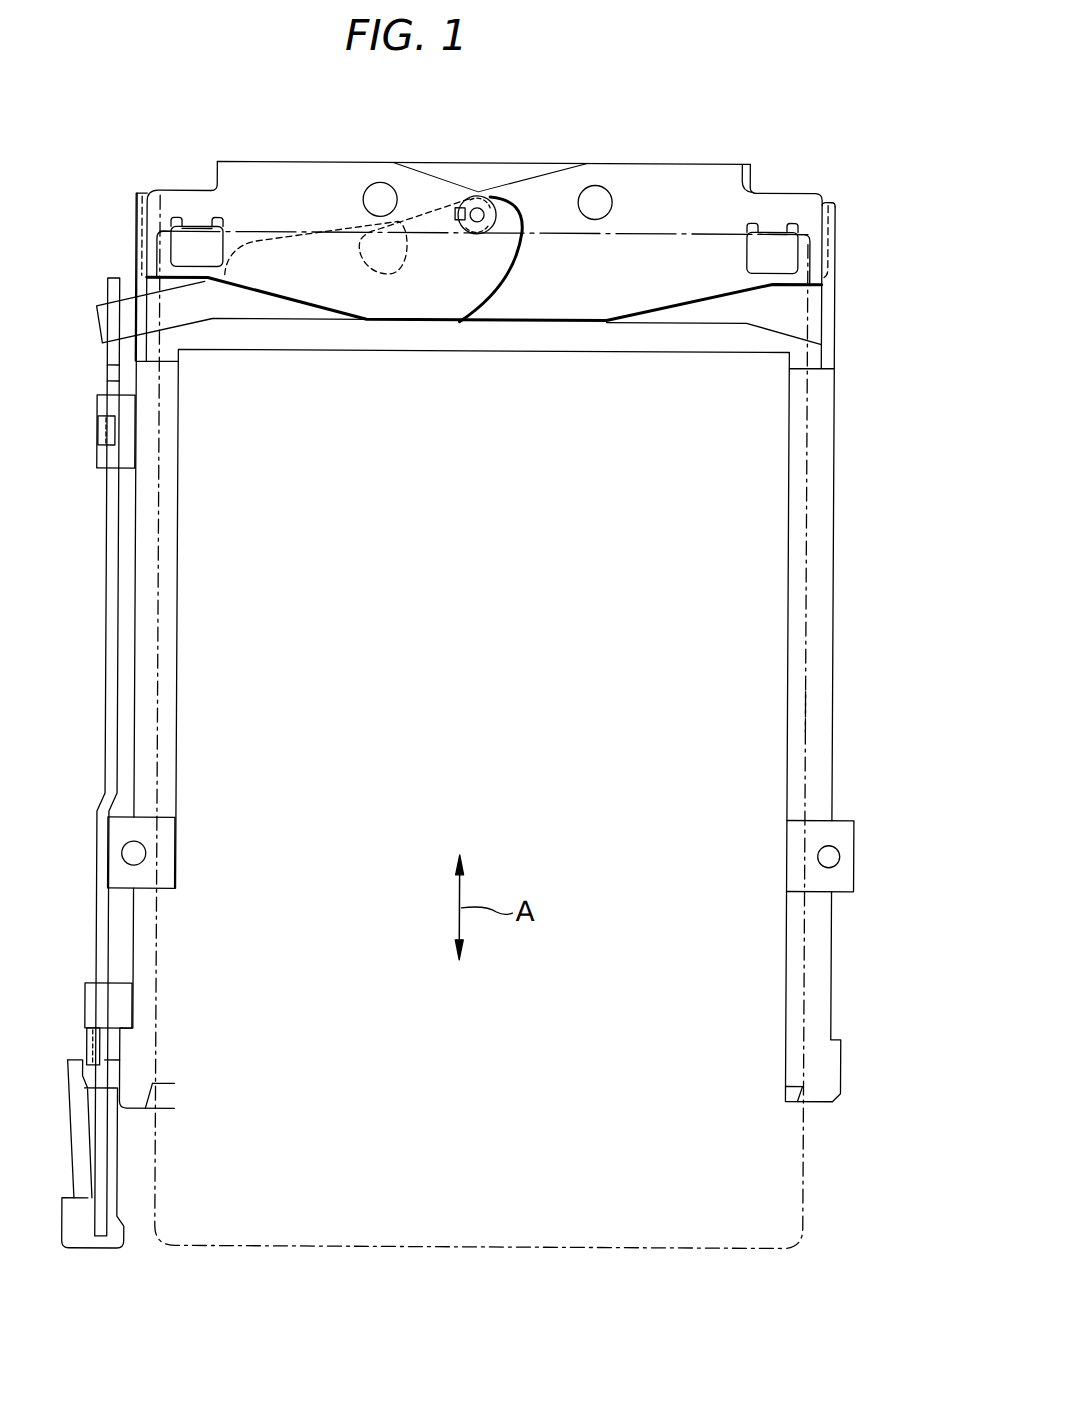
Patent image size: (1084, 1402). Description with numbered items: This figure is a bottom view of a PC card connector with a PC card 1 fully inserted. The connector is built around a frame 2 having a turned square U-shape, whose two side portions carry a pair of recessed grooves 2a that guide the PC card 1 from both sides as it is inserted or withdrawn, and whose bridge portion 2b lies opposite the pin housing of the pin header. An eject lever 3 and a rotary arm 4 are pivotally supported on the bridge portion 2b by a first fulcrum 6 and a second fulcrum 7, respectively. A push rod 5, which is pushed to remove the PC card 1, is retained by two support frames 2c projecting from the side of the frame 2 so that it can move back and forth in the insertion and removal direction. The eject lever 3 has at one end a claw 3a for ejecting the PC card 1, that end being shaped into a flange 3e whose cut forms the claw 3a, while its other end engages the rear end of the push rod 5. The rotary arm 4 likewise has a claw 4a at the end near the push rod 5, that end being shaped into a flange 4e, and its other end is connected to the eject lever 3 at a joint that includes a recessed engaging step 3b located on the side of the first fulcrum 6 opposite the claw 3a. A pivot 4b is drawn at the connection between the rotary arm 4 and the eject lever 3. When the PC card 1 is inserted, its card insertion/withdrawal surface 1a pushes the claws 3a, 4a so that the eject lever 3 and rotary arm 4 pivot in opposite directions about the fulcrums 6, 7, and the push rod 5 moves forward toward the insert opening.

The PC card 1 is at (806, 1180).
The card insertion/withdrawal surface 1a is at (640, 230).
The frame 2 is at (838, 440).
The recessed grooves 2a is at (804, 717).
The bridge portion 2b is at (500, 168).
The support frames 2c is at (98, 455).
The eject lever 3 is at (752, 188).
The claw 3a is at (775, 231).
The recessed engaging step 3b is at (517, 192).
The flange 3e is at (812, 248).
The rotary arm 4 is at (246, 172).
The claw 4a is at (205, 226).
The pivot pin 4b is at (478, 192).
The flange 4e is at (154, 248).
The push rod 5 is at (106, 668).
The first fulcrum 6 is at (598, 192).
The second fulcrum 7 is at (382, 196).